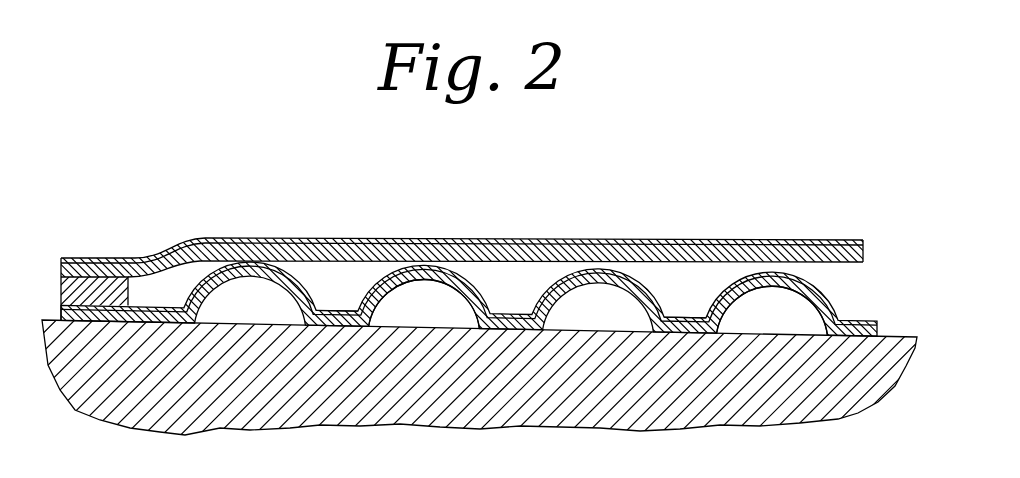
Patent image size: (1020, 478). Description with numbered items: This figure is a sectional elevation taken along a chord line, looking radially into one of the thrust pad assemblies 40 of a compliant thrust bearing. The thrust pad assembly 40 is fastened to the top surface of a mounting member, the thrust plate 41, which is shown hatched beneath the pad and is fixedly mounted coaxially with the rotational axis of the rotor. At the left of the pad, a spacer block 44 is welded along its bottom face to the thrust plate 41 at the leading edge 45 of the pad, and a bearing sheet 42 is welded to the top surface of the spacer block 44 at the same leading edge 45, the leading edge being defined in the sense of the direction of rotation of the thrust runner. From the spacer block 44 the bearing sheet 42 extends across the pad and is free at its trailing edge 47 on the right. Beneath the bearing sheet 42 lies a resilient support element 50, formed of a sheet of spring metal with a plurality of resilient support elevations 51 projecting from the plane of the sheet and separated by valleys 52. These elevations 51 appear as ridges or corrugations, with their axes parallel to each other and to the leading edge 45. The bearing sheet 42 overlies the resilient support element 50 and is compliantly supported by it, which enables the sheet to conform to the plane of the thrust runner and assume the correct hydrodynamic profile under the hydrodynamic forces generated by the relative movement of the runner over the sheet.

The thrust pad assembly 40 is at (496, 213).
The thrust plate 41 is at (249, 386).
The bearing sheet 42 is at (660, 255).
The spacer block 44 is at (90, 289).
The leading edge 45 is at (151, 237).
The trailing edge 47 is at (869, 234).
The resilient support element 50 is at (848, 292).
The resilient support elevations 51 is at (433, 280).
The valleys 52 is at (511, 291).